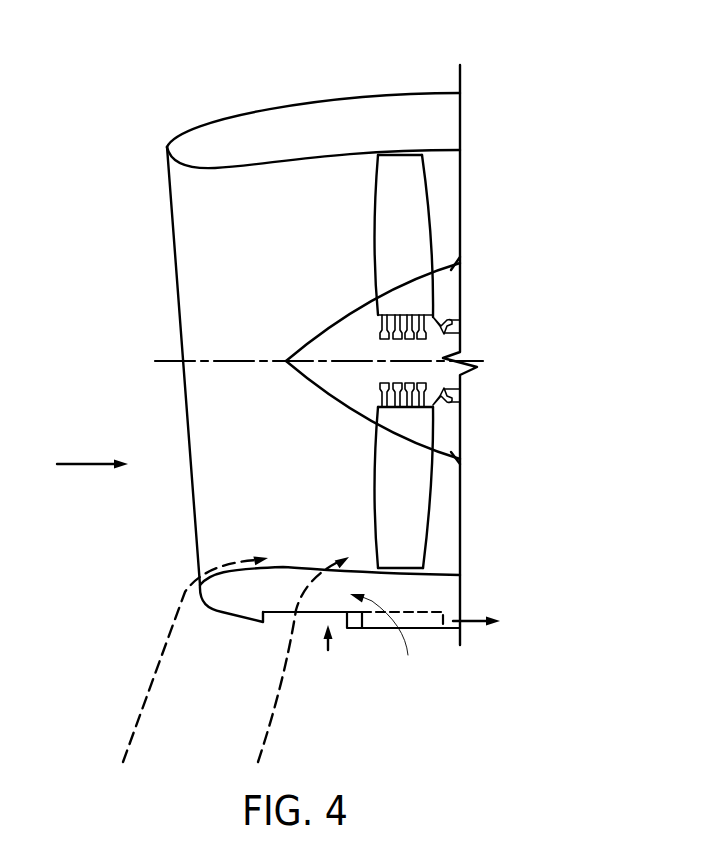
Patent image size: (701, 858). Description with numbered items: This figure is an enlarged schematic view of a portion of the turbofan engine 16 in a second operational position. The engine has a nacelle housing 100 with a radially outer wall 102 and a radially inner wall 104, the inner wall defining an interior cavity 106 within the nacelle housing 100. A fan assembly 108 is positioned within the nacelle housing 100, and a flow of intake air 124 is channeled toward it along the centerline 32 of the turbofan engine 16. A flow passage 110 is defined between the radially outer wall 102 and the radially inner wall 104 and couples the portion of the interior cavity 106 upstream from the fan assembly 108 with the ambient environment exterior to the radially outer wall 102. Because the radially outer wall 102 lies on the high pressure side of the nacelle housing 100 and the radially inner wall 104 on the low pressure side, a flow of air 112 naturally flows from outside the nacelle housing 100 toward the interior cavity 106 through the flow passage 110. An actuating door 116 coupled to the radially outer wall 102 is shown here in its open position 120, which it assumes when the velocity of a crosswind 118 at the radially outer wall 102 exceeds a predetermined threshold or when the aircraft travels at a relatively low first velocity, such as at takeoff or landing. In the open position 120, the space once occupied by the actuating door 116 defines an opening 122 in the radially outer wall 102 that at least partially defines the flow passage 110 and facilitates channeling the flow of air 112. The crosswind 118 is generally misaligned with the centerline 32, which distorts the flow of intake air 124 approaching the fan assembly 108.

The turbofan engine 16 is at (110, 44).
The nacelle housing 100 is at (228, 90).
The interior cavity 106 is at (284, 467).
The fan assembly 108 is at (444, 192).
The radially inner wall 104 is at (442, 568).
The centerline 32 is at (168, 360).
The flow of intake air 124 is at (87, 462).
The radially outer wall 102 is at (452, 629).
The actuating door 116 is at (430, 612).
The open position 120 is at (478, 600).
The flow passage 110 is at (389, 639).
The crosswind 118 is at (138, 688).
The flow of air 112 is at (268, 708).
The opening 122 is at (328, 651).